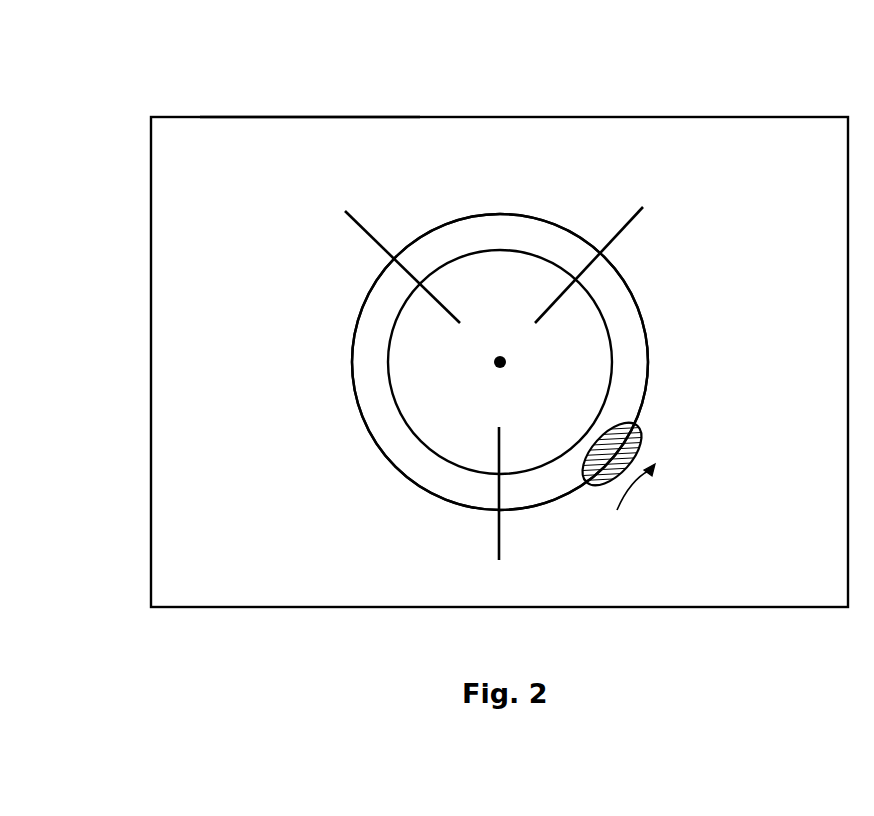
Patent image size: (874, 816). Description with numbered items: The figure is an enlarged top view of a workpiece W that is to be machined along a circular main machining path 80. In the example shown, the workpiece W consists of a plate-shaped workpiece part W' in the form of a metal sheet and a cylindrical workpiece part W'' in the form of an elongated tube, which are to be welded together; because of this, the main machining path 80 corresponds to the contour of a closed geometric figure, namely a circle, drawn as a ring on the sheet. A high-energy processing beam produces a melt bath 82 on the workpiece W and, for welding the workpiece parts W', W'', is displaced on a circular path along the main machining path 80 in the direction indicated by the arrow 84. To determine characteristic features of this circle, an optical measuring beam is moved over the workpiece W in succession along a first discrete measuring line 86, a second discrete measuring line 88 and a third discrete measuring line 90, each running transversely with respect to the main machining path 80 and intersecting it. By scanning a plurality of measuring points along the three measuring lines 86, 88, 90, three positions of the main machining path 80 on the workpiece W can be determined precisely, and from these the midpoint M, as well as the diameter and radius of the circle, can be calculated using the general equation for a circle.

The workpiece W is at (433, 361).
The plate-shaped workpiece part W' is at (310, 89).
The cylindrical workpiece part W'' is at (500, 273).
The midpoint M is at (511, 372).
The main machining path 80 is at (398, 475).
The melt bath 82 is at (637, 433).
The arrow 84 is at (633, 490).
The first discrete measuring line 86 is at (350, 218).
The second discrete measuring line 88 is at (618, 235).
The third discrete measuring line 90 is at (500, 542).